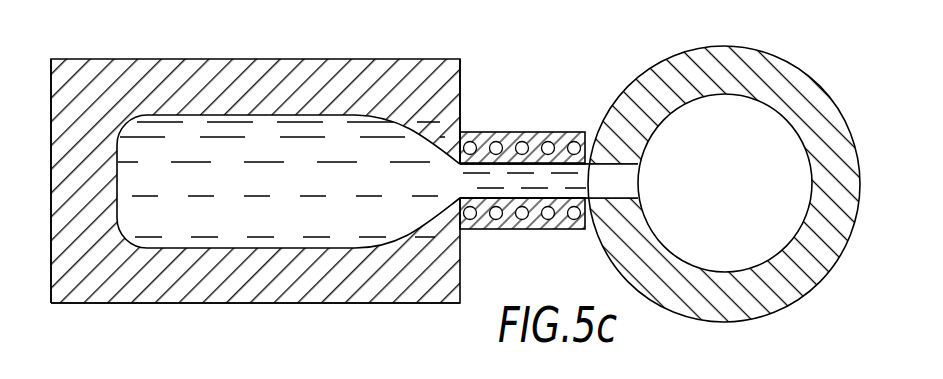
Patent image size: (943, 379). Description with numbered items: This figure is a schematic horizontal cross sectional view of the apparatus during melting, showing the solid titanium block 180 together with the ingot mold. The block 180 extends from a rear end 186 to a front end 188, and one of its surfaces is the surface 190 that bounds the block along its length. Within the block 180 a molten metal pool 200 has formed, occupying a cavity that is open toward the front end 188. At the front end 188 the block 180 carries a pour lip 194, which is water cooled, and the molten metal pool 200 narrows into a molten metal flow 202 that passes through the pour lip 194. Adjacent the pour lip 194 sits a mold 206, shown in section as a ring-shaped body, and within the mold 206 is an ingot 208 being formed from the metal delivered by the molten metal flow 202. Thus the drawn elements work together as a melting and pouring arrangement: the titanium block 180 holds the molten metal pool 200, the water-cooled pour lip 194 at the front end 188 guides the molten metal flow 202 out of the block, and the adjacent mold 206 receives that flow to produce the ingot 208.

The solid titanium block 180 is at (157, 59).
The rear end 186 is at (51, 80).
The front end 188 is at (460, 81).
The surface 190 is at (243, 304).
The pour lip 194 is at (511, 133).
The molten metal pool 200 is at (173, 227).
The molten metal flow 202 is at (513, 188).
The mold 206 is at (635, 80).
The ingot 208 is at (773, 122).